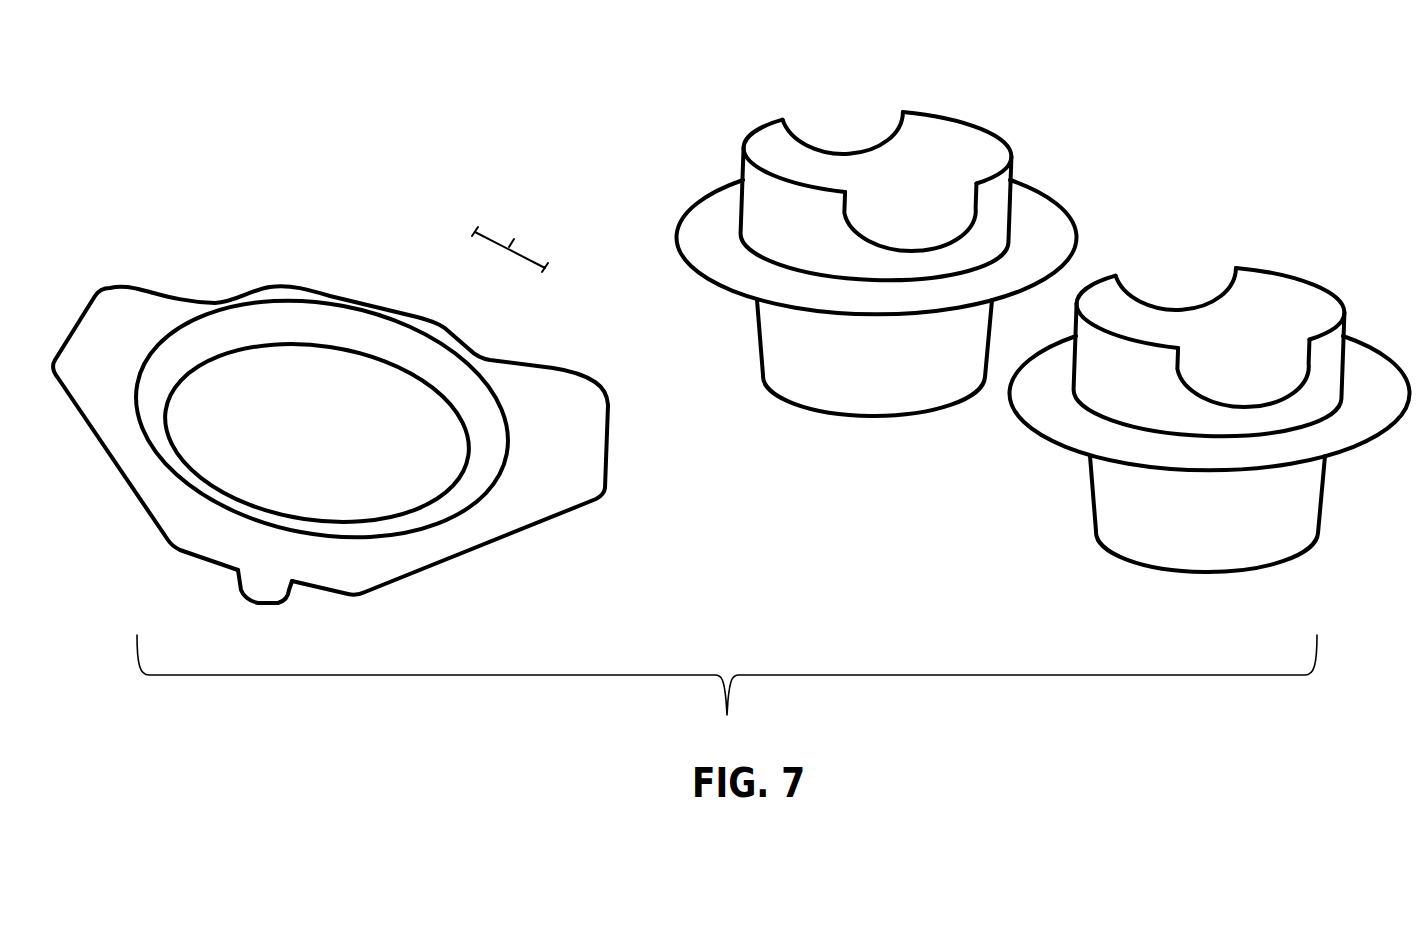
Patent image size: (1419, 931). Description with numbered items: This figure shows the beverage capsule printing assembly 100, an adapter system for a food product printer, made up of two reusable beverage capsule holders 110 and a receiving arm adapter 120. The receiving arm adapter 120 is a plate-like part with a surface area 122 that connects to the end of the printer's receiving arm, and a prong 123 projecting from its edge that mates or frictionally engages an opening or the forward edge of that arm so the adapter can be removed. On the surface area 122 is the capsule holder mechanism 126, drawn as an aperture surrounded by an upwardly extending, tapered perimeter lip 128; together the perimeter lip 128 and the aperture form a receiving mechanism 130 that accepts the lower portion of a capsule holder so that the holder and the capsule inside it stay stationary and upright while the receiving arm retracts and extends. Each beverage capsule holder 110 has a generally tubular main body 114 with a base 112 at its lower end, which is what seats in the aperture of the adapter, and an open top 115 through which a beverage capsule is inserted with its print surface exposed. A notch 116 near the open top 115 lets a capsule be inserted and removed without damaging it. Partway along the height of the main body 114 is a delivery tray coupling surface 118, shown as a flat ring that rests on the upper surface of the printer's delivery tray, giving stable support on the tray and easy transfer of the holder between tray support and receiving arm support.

The beverage capsule printing assembly 100 is at (291, 157).
The beverage capsule holder 110 is at (1048, 506).
The base 112 is at (788, 386).
The main body 114 is at (738, 315).
The open top 115 is at (775, 152).
The notch 116 is at (1212, 300).
The delivery tray coupling surface 118 is at (1214, 356).
The receiving arm adapter 120 is at (556, 555).
The surface area 122 is at (573, 470).
The prong 123 is at (300, 598).
The capsule holder mechanism 126 is at (382, 378).
The perimeter lip 128 is at (462, 380).
The receiving mechanism 130 is at (514, 245).